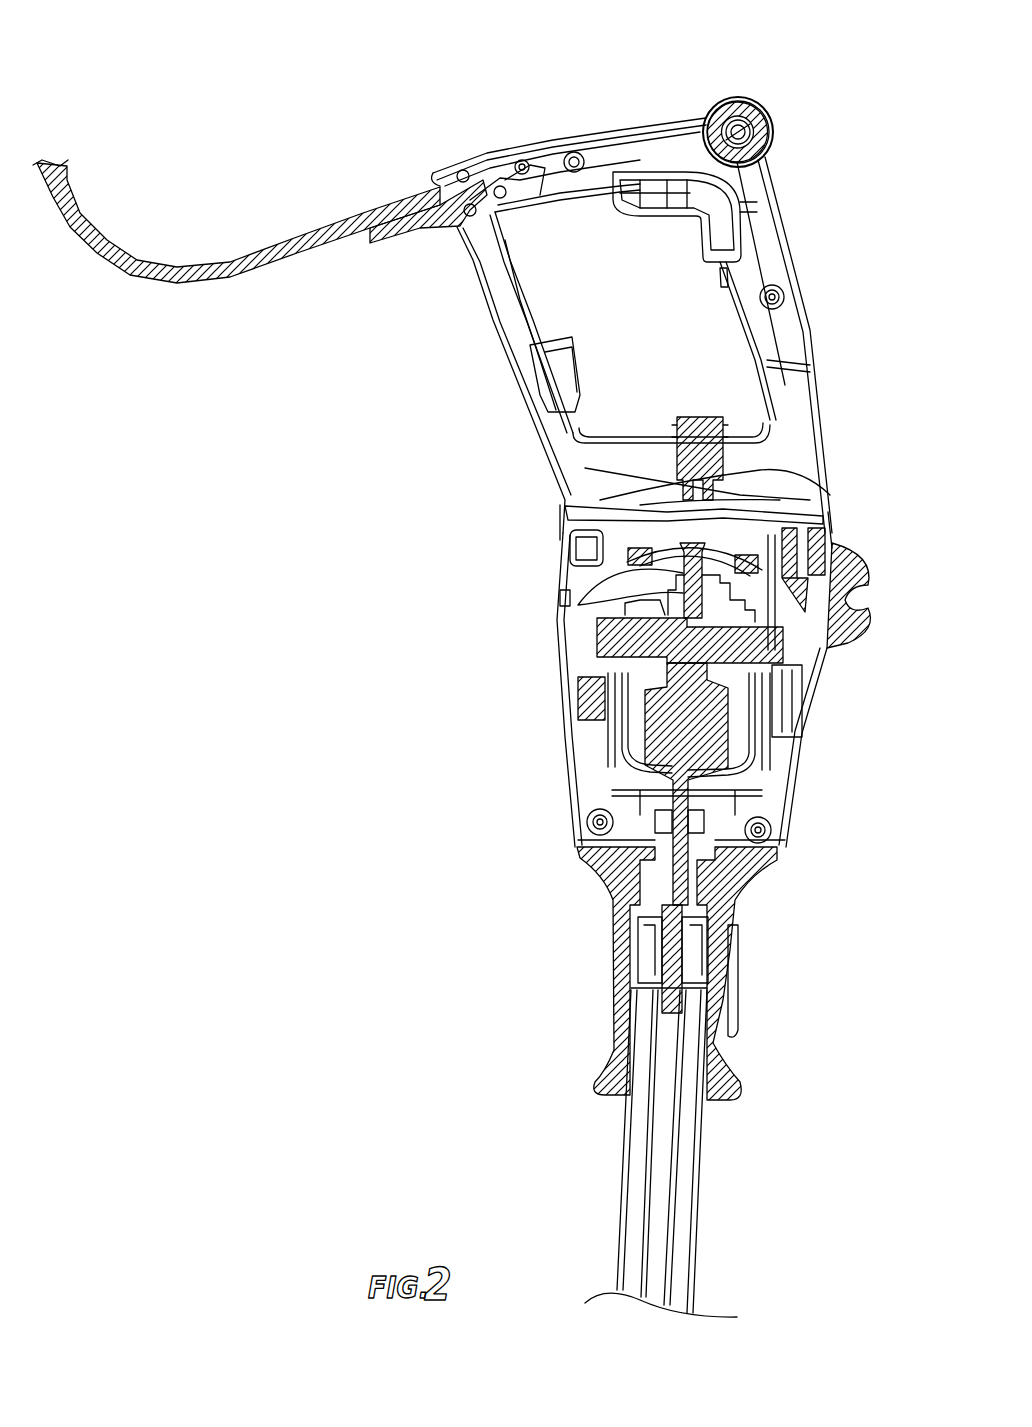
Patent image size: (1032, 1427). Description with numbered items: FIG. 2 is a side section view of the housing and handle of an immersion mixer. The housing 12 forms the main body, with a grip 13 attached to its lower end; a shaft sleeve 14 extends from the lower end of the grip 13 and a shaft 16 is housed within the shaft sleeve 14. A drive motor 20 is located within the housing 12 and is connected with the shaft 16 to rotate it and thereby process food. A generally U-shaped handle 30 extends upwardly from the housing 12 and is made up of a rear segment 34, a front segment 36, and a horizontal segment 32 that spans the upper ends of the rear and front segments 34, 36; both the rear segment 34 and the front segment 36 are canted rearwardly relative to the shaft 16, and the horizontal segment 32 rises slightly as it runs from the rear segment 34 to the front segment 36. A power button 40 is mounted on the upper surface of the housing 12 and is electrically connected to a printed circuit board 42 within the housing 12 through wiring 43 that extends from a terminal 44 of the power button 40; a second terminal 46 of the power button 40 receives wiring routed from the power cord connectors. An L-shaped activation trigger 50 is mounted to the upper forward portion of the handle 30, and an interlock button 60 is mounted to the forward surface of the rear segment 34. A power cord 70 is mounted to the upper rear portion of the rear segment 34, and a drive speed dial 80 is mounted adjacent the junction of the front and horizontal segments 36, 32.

The housing 12 is at (795, 795).
The grip 13 is at (720, 958).
The shaft sleeve 14 is at (700, 1213).
The shaft 16 is at (660, 1275).
The drive motor 20 is at (708, 650).
The handle 30 is at (862, 282).
The horizontal segment 32 is at (612, 128).
The rear segment 34 is at (505, 355).
The front segment 36 is at (818, 335).
The power button 40 is at (707, 443).
The printed circuit board 42 is at (757, 515).
The wiring 43 is at (720, 507).
The terminal 44 is at (723, 497).
The terminal 46 is at (610, 527).
The activation trigger 50 is at (750, 243).
The interlock button 60 is at (568, 375).
The power cord 70 is at (222, 270).
The drive speed dial 80 is at (835, 66).